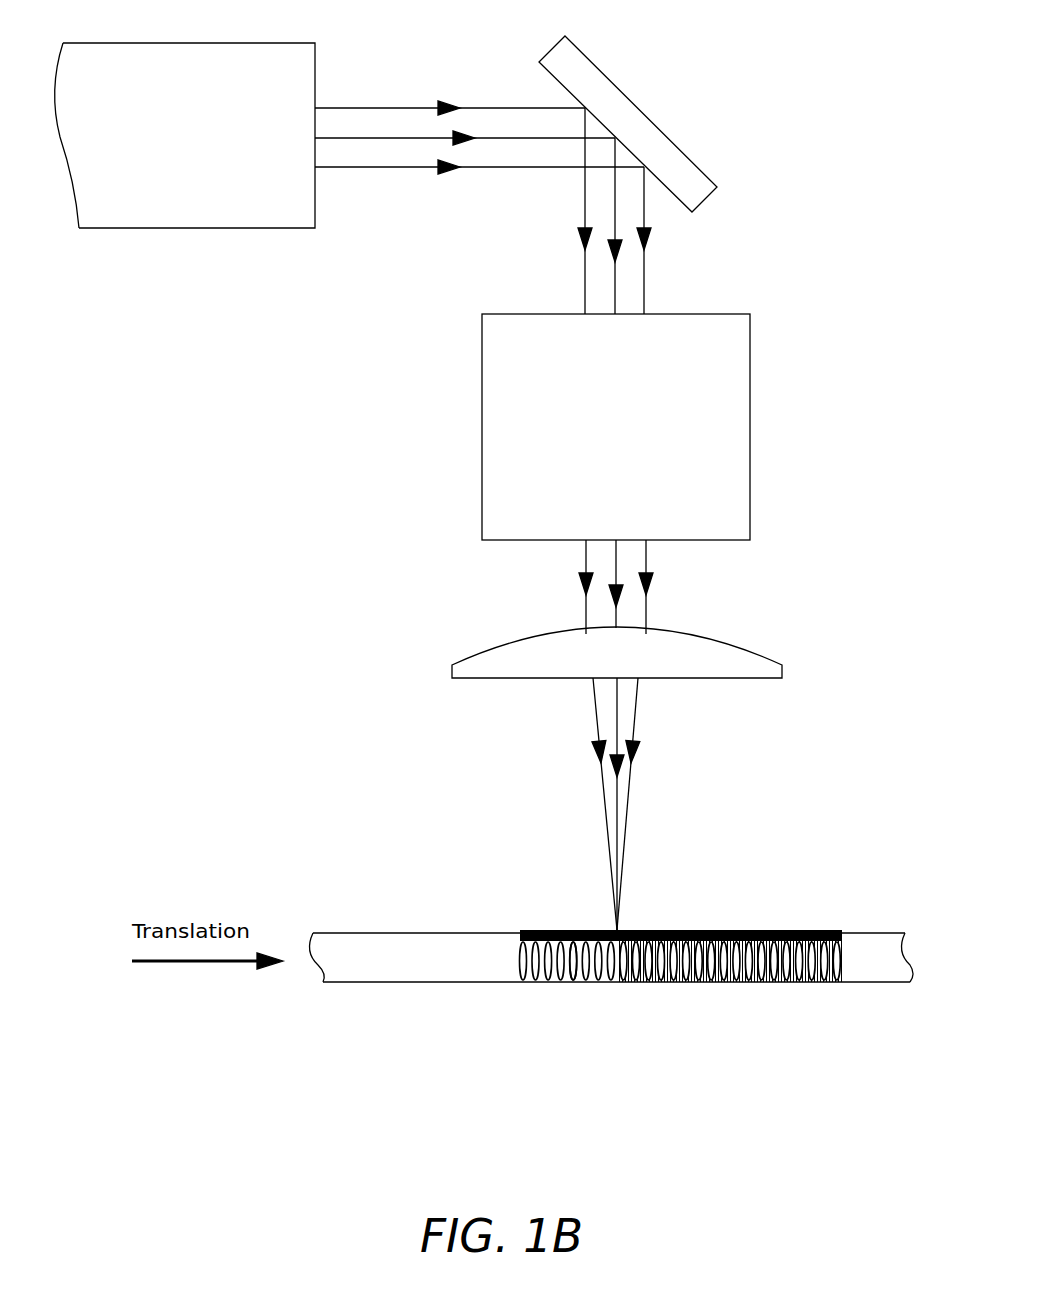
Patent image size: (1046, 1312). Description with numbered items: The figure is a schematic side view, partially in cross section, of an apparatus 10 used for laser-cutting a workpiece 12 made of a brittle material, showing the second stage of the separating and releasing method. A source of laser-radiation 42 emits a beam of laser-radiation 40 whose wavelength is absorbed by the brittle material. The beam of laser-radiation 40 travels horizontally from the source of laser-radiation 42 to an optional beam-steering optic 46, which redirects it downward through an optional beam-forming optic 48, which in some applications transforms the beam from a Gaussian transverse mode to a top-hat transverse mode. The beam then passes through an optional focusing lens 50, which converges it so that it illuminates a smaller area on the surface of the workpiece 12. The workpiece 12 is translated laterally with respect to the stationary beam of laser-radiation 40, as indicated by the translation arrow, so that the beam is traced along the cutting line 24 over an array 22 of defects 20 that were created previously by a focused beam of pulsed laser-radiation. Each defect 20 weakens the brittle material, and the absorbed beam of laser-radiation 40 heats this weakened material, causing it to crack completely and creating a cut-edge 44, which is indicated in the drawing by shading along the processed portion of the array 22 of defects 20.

The apparatus 10 is at (190, 1075).
The workpiece 12 is at (398, 937).
The defect 20 is at (548, 982).
The array of defects 22 is at (583, 996).
The cutting line 24 is at (778, 930).
The beam of laser-radiation 40 is at (572, 279).
The source of laser-radiation 42 is at (127, 223).
The cut-edge 44 is at (780, 980).
The beam-steering optic 46 is at (658, 137).
The beam-forming optic 48 is at (742, 370).
The focusing lens 50 is at (770, 665).